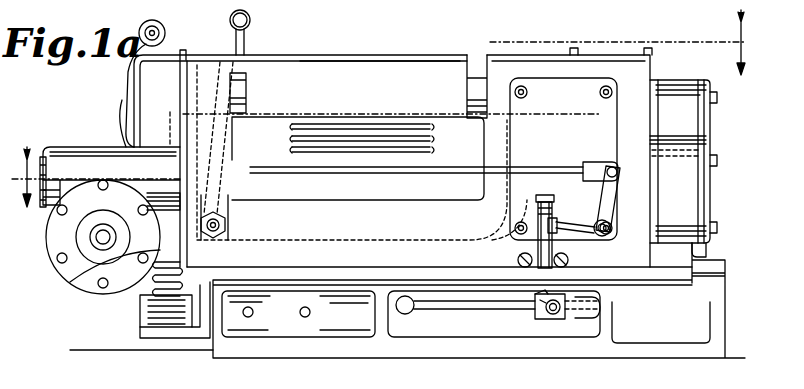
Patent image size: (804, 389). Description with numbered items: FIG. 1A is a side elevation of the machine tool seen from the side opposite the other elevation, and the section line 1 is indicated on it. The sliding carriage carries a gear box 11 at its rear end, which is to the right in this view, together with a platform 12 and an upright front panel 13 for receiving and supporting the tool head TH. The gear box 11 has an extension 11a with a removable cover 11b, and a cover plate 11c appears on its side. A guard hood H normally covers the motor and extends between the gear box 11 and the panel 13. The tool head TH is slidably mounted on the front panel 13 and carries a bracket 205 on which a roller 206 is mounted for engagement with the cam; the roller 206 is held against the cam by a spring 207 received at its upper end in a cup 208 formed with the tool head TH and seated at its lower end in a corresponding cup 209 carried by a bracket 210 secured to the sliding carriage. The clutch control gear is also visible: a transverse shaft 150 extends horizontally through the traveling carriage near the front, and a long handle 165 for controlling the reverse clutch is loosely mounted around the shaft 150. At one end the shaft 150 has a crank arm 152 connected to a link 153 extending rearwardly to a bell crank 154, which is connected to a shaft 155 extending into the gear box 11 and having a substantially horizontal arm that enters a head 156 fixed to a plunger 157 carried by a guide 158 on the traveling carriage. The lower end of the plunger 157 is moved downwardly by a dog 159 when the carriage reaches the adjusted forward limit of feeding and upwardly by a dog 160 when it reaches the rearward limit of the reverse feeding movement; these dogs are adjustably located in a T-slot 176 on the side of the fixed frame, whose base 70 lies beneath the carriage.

The section line 1 is at (91, 177).
The gear box 11 is at (612, 75).
The extension of the gear box 11a is at (683, 95).
The removable cover 11b is at (708, 140).
The cover plate 11c is at (554, 58).
The platform 12 is at (299, 240).
The upright front panel 13 is at (185, 62).
The base 70 is at (280, 346).
The transverse shaft 150 is at (200, 242).
The crank arm 152 is at (226, 207).
The link 153 is at (273, 163).
The bell crank 154 is at (606, 197).
The shaft 155 is at (612, 234).
The head 156 is at (545, 228).
The plunger 157 is at (566, 254).
The guide 158 is at (518, 261).
The dog 159 is at (388, 292).
The dog 160 is at (538, 322).
The long handle 165 is at (248, 43).
The T-slot 176 is at (488, 312).
The bracket 205 is at (140, 56).
The roller 206 is at (162, 30).
The spring 207 is at (155, 290).
The cup 208 is at (100, 267).
The cup 209 is at (146, 313).
The bracket 210 is at (150, 334).
The guard hood H is at (420, 78).
The tool head TH is at (126, 112).